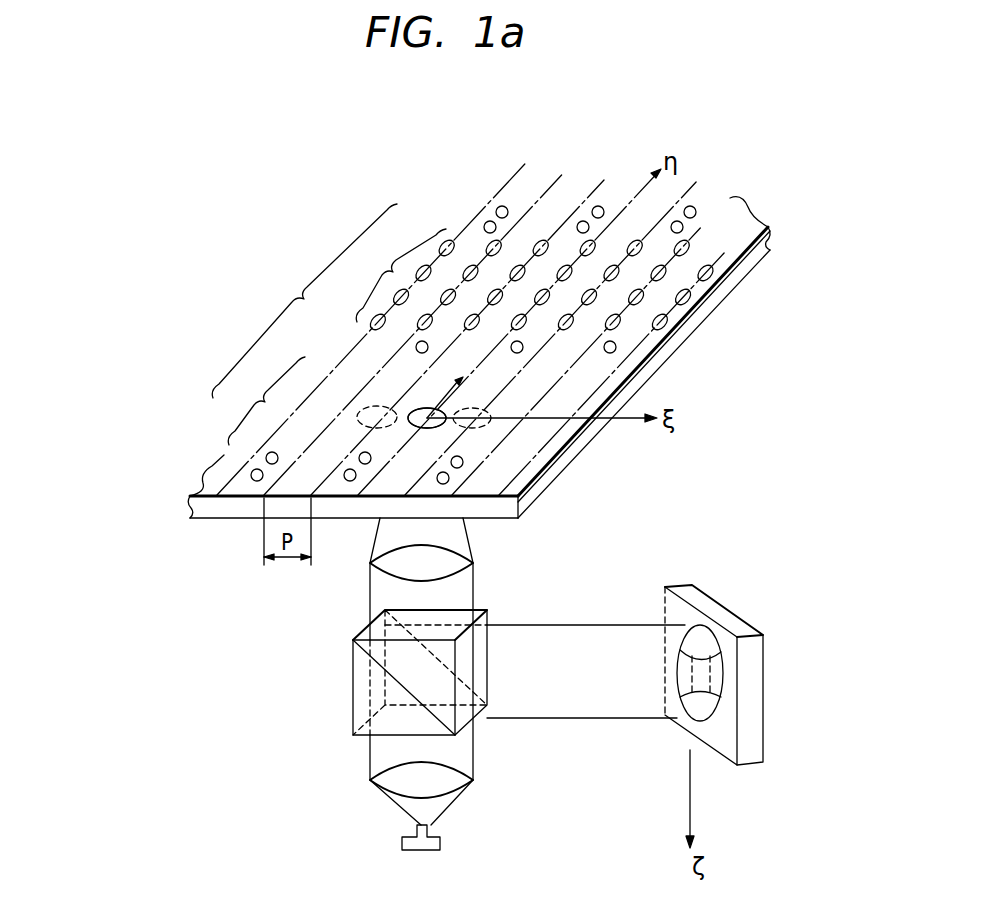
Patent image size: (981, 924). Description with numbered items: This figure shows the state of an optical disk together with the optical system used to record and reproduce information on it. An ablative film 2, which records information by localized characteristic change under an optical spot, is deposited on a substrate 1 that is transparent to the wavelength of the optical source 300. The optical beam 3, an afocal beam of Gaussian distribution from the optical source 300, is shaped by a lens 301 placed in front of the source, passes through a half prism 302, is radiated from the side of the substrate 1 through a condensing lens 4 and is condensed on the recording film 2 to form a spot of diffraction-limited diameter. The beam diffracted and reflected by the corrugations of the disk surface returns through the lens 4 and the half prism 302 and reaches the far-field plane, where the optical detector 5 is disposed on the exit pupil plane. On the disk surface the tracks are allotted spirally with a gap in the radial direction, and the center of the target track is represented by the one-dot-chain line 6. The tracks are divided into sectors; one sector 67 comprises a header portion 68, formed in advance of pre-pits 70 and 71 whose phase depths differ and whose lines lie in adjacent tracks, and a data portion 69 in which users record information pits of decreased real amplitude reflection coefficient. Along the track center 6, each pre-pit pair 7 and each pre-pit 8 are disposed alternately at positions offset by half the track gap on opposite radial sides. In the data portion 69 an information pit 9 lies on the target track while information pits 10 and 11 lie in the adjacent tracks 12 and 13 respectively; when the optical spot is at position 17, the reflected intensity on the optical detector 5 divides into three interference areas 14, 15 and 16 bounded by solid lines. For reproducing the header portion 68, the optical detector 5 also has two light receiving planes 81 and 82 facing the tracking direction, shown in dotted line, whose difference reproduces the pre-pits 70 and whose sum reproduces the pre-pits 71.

The substrate 1 is at (200, 516).
The ablative film 2 is at (193, 495).
The optical beam 3 is at (477, 593).
The condensing lens 4 is at (455, 560).
The optical detector 5 is at (745, 627).
The center of the track 6 is at (637, 195).
The pre-pit pair 7 is at (263, 474).
The pre-pit 8 is at (417, 351).
The information pit 9 is at (421, 428).
The information pit 10 is at (360, 420).
The information pit 11 is at (490, 411).
The adjacent track 12 is at (601, 183).
The adjacent track 13 is at (686, 192).
The interference area 14 is at (700, 687).
The interference area 15 is at (688, 633).
The interference area 16 is at (690, 710).
The optical spot position 17 is at (428, 408).
The sector 67 is at (304, 301).
The header portion 68 is at (401, 275).
The data portion 69 is at (266, 401).
The pre-pit 70 is at (447, 240).
The pre-pit 71 is at (499, 246).
The light receiving plane 81 is at (715, 678).
The light receiving plane 82 is at (680, 670).
The optical source 300 is at (440, 843).
The collimator lens 301 is at (457, 783).
The half prism 302 is at (357, 700).